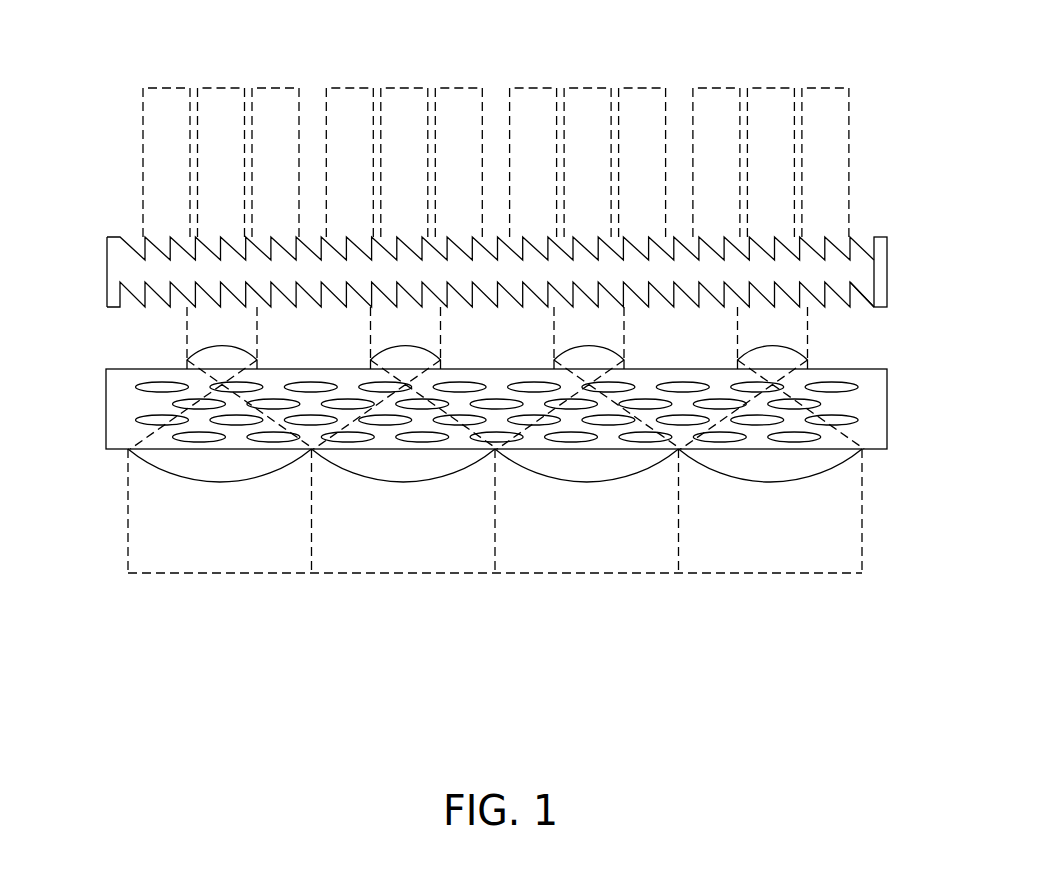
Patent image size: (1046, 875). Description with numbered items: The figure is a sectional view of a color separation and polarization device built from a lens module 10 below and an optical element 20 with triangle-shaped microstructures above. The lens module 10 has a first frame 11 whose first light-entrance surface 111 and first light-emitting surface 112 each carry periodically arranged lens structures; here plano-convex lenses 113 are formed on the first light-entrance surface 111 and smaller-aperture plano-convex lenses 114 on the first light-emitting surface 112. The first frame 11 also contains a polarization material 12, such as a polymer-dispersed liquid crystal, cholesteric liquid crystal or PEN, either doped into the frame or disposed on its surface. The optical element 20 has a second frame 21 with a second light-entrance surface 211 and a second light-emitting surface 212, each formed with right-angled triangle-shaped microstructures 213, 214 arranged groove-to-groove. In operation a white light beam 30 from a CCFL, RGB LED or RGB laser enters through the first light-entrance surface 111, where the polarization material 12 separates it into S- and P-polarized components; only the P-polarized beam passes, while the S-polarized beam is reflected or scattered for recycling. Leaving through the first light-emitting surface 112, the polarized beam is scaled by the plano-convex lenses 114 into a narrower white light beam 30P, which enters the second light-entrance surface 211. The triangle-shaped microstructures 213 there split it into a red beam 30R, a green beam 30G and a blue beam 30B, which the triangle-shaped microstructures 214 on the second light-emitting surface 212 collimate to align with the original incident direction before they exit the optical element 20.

The lens module 10 is at (497, 445).
The first frame 11 is at (497, 414).
The first light-entrance surface 111 is at (114, 450).
The first light-emitting surface 112 is at (117, 368).
The plano-convex lens 113 is at (790, 482).
The plano-convex lens 114 is at (777, 346).
The polarization material 12 is at (815, 417).
The optical element 20 is at (502, 230).
The second frame 21 is at (502, 271).
The second light-entrance surface 211 is at (135, 302).
The second light-emitting surface 212 is at (137, 243).
The triangle-shaped microstructures 213 is at (860, 297).
The triangle-shaped microstructures 214 is at (870, 248).
The white light beam 30 is at (858, 540).
The white light beam 30P is at (745, 333).
The red beam 30R is at (712, 85).
The green beam 30G is at (770, 85).
The blue beam 30B is at (833, 85).